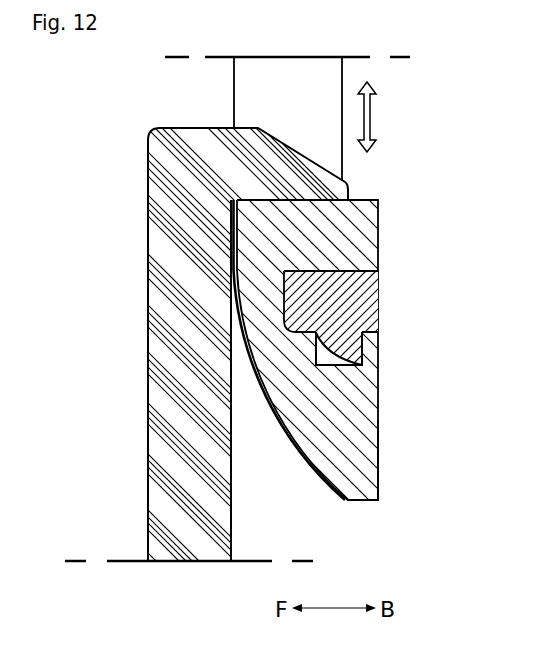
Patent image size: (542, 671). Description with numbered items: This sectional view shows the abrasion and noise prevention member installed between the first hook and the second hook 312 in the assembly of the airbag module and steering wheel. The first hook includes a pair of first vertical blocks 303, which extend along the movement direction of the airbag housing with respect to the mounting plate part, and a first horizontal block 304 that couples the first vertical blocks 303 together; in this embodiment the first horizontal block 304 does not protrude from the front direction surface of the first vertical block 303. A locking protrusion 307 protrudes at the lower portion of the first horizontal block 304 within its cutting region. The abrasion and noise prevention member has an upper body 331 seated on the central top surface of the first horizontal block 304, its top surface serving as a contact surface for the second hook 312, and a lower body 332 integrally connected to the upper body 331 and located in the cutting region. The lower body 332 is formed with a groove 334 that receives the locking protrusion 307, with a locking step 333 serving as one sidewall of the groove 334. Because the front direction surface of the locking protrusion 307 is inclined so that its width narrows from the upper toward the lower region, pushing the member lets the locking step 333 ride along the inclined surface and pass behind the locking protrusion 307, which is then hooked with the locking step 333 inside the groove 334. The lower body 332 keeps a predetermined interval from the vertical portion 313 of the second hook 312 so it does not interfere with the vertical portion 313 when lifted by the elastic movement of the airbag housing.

The first vertical block 303 is at (250, 93).
The second hook 312 is at (147, 231).
The vertical portion 313 is at (165, 302).
The upper body 331 is at (340, 230).
The lower body 332 is at (342, 430).
The locking protrusion 307 is at (338, 346).
The locking step 333 is at (329, 317).
The groove 334 is at (318, 356).
The first horizontal block 304 is at (308, 463).